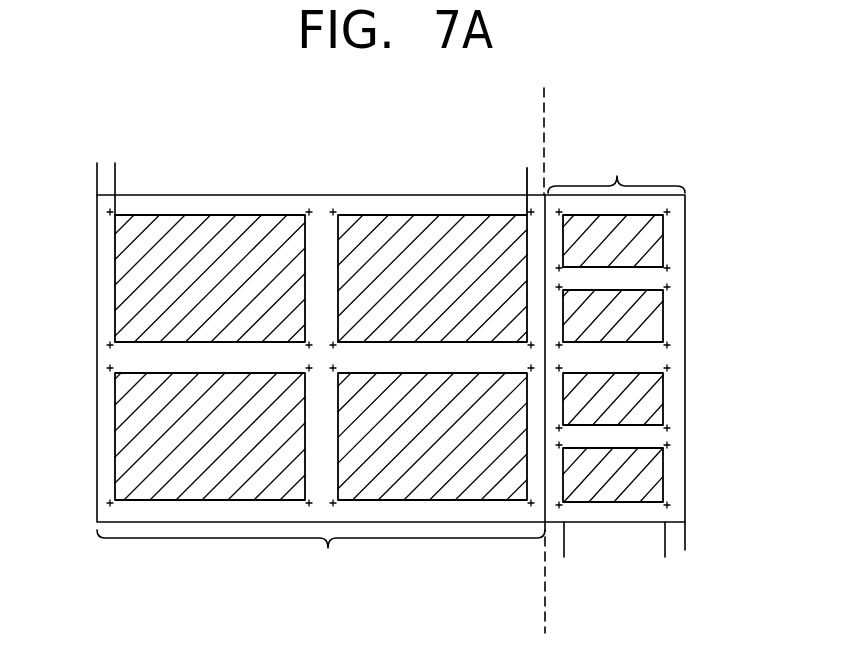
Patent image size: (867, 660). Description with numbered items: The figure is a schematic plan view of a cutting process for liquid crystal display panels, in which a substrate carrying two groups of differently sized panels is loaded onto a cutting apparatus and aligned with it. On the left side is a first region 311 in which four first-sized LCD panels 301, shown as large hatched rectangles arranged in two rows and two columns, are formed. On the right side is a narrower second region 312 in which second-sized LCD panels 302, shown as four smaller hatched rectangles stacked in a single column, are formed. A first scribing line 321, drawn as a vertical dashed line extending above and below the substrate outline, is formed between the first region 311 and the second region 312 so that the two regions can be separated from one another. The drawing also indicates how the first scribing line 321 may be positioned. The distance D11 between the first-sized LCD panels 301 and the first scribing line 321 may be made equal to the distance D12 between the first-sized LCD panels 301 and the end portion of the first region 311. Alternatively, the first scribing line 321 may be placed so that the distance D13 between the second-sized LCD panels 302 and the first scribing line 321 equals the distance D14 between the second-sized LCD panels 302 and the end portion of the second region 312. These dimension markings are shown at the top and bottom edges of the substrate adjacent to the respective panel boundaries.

The first-sized LCD panels 301 is at (219, 249).
The second-sized LCD panels 302 is at (652, 312).
The first region 311 is at (321, 386).
The second region 312 is at (615, 334).
The first scribing line 321 is at (544, 99).
The distance between first-sized LCD panels and first scribing line D11 is at (578, 175).
The distance between first-sized LCD panels and end portion of first region D12 is at (63, 170).
The distance between second-sized LCD panels and first scribing line D13 is at (513, 550).
The distance between second-sized LCD panels and end portion of second region D14 is at (632, 543).